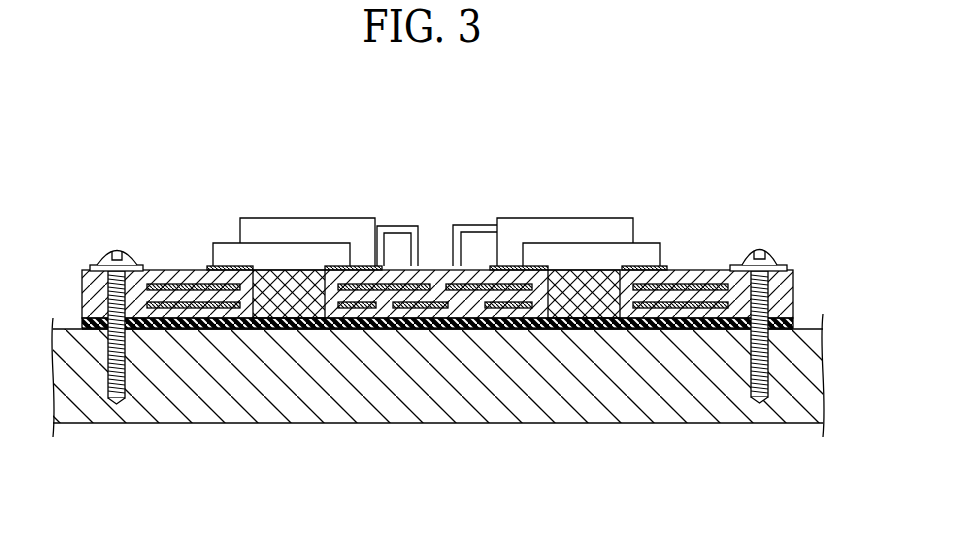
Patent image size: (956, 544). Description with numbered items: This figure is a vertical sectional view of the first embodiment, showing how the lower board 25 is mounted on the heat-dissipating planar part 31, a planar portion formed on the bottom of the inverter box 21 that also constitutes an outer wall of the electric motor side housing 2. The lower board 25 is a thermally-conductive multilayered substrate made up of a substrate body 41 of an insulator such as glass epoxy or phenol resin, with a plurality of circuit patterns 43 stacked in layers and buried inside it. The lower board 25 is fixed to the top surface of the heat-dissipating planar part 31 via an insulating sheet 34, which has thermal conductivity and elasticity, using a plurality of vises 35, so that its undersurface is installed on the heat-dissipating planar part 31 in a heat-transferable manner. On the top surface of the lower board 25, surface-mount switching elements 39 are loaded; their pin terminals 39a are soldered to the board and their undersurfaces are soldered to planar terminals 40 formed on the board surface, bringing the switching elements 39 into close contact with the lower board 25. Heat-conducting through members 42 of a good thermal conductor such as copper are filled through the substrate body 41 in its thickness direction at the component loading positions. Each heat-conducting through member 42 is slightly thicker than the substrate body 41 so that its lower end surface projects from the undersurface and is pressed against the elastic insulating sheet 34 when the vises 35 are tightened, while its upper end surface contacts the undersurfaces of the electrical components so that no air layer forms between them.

The base (housing) 2 is at (80, 423).
The electronic module 21 is at (437, 279).
The lower board 25 is at (187, 269).
The heat-dissipating planar part 31 is at (425, 330).
The insulating sheet 34 is at (470, 326).
The vis 35 is at (107, 257).
The switching element 39 is at (317, 218).
The pin terminal 39a is at (388, 225).
The planar terminal 40 is at (222, 268).
The substrate body 41 is at (200, 268).
The heat-conducting through member 42 is at (268, 290).
The circuit pattern 43 is at (150, 284).